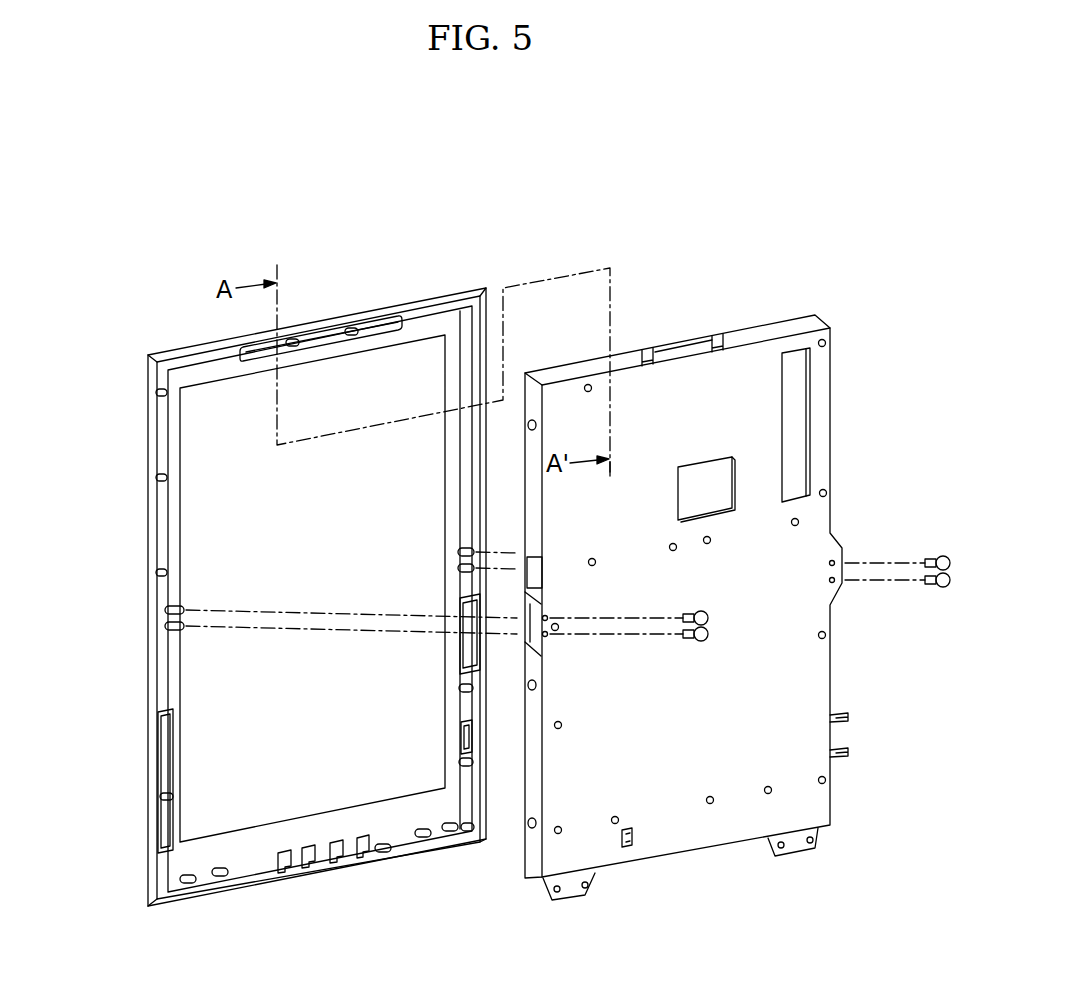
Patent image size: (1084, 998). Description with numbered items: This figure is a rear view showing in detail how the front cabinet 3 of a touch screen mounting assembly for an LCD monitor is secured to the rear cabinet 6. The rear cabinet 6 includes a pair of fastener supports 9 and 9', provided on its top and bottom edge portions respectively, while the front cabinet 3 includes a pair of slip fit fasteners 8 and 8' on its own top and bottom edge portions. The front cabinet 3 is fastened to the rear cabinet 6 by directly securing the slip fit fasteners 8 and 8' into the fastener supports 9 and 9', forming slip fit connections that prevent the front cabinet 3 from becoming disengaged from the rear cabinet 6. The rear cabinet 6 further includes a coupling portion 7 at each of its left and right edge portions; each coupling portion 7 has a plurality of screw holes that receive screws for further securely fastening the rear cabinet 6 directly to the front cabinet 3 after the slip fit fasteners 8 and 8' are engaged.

The front cabinet 3 is at (128, 614).
The rear cabinet 6 is at (644, 872).
The coupling portion 7 is at (537, 643).
The slip fit fastener 8 is at (321, 285).
The slip fit fastener 8' is at (323, 907).
The fastener support 9 is at (681, 285).
The fastener support 9' is at (680, 892).